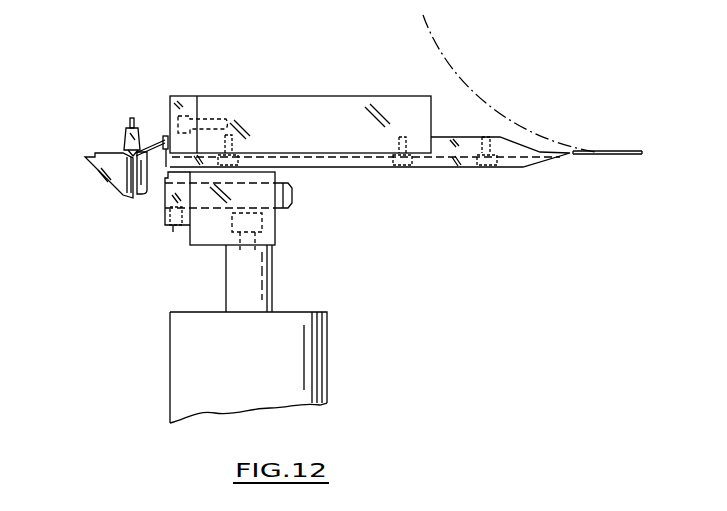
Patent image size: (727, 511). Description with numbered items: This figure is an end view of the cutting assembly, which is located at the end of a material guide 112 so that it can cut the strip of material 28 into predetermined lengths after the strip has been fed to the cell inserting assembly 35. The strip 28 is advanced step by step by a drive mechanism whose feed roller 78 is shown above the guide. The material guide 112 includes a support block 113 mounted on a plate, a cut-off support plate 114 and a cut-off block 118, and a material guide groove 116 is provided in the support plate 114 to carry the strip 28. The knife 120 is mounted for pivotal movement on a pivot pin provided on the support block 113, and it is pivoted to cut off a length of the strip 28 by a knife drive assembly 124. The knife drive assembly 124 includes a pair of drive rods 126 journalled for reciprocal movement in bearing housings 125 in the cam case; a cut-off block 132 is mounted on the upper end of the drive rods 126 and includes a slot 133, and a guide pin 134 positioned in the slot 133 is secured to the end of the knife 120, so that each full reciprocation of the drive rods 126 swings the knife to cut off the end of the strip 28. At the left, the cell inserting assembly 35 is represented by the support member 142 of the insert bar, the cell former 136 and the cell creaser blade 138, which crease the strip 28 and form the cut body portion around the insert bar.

The feed roller 78 is at (423, 17).
The material guide 112 is at (323, 92).
The support block 113 is at (357, 96).
The cut-off support plate 114 is at (380, 168).
The material guide groove 116 is at (463, 160).
The cut-off block 118 is at (180, 96).
The strip of material 28 is at (153, 140).
The cell inserting assembly 35 is at (112, 140).
The support member 142 is at (123, 145).
The cell former 136 is at (107, 173).
The cell creaser blade 138 is at (133, 193).
The knife 120 is at (163, 197).
The slot 133 is at (173, 236).
The cut-off block 132 is at (275, 238).
The guide pin 134 is at (292, 195).
The knife drive assembly 124 is at (331, 300).
The drive rods 126 is at (262, 284).
The bearing housings 125 is at (313, 358).